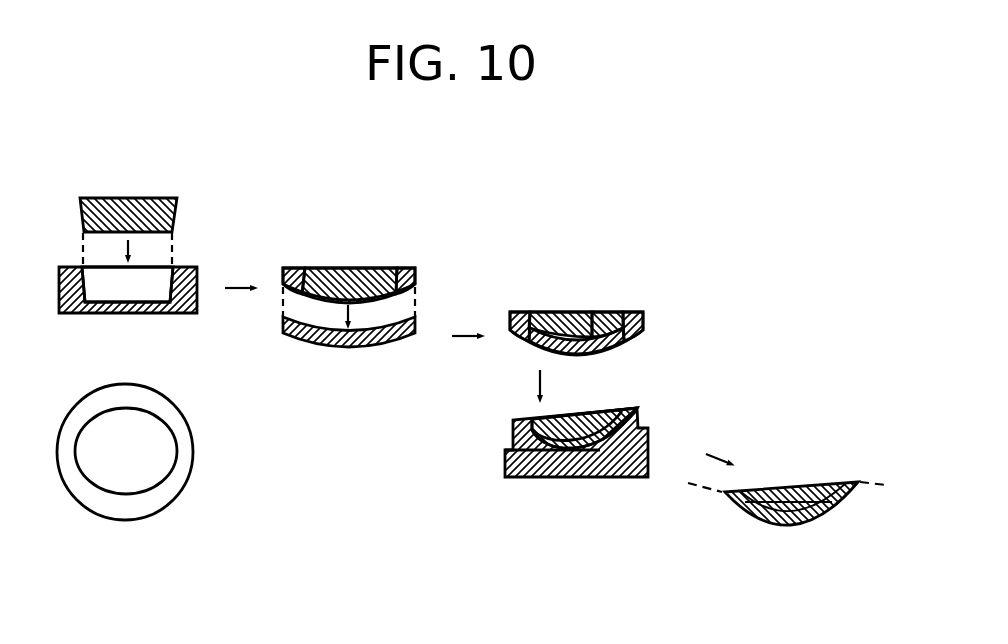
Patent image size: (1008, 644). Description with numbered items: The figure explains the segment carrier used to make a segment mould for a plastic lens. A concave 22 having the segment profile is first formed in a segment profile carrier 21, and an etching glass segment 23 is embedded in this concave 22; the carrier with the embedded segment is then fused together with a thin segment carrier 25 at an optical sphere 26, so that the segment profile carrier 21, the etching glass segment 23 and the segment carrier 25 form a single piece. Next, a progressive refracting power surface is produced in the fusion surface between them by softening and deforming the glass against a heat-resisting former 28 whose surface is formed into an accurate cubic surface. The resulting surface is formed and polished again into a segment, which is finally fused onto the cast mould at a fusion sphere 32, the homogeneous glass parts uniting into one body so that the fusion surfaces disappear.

The segment profile carrier 21 is at (183, 313).
The concave 22 is at (83, 288).
The etching glass segment 23 is at (170, 204).
The segment carrier 25 is at (333, 346).
The optical sphere 26 is at (593, 312).
The heat-resisting former 28 is at (638, 452).
The fusion sphere 32 is at (820, 514).